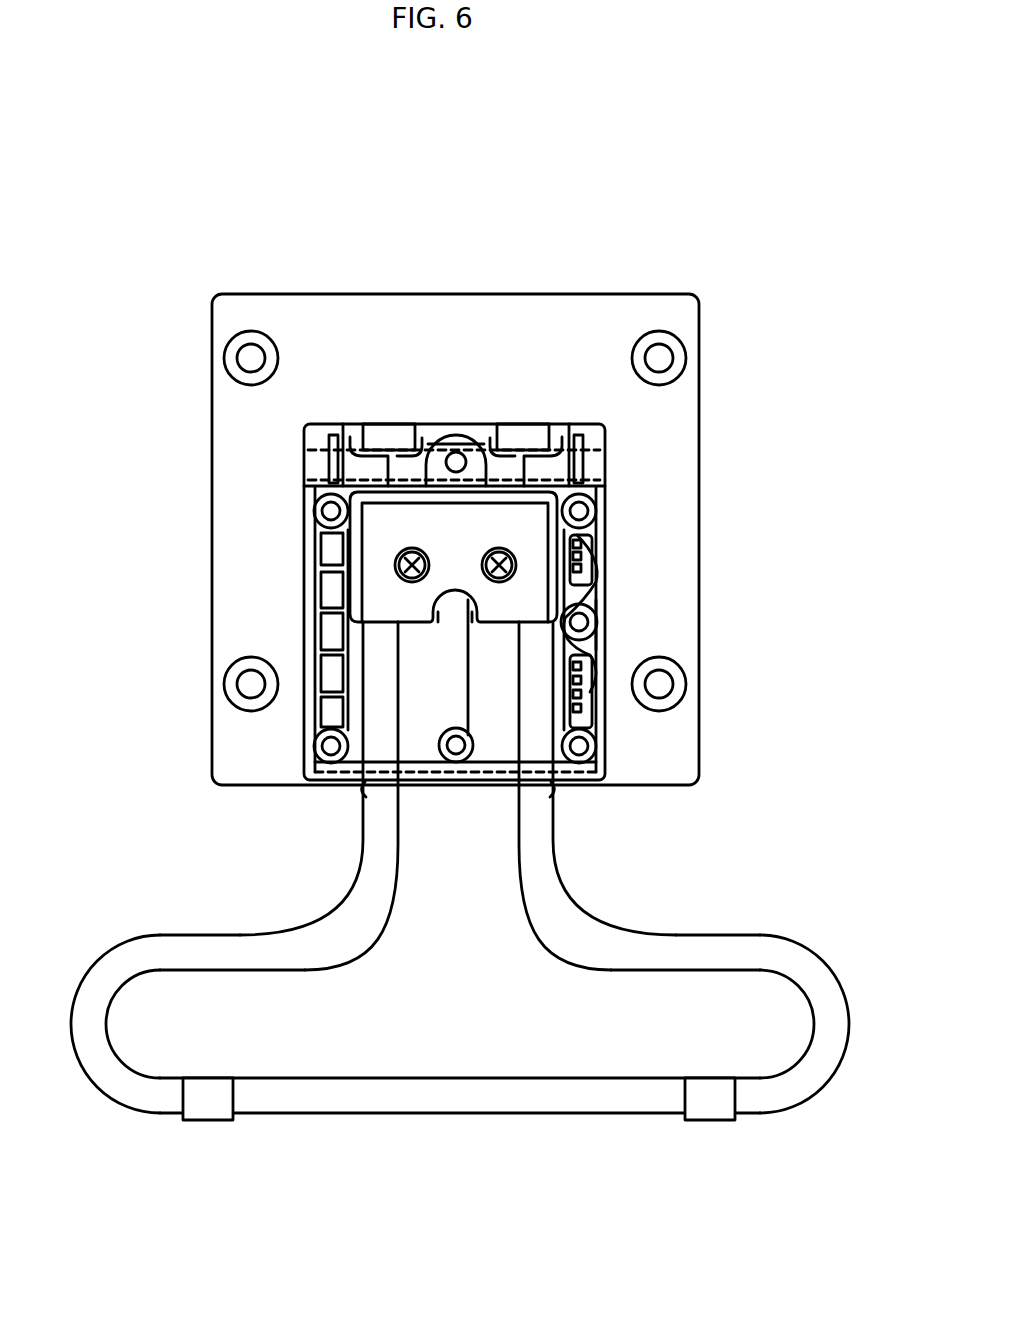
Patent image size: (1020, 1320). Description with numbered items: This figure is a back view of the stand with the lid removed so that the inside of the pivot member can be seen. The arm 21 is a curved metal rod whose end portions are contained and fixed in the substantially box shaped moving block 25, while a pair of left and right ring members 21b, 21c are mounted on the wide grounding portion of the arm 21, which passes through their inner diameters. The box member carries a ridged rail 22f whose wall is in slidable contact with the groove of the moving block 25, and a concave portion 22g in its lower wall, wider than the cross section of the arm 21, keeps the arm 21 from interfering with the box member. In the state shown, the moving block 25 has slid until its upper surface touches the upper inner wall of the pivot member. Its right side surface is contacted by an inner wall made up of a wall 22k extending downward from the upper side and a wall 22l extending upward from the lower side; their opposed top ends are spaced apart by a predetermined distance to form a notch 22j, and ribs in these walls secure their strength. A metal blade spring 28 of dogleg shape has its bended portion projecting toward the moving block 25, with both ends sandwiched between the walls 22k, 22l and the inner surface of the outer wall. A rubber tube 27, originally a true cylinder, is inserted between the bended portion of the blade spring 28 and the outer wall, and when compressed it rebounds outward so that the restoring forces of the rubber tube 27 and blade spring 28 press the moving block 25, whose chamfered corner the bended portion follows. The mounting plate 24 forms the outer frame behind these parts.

The arm 21 is at (185, 935).
The ring member 21b is at (713, 1122).
The ring member 21c is at (210, 1122).
The rail 22f is at (480, 697).
The concave portion 22g is at (370, 787).
The notch 22j is at (590, 652).
The wall 22k is at (592, 519).
The wall 22l is at (590, 712).
The mounting plate 24 is at (422, 293).
The moving block 25 is at (370, 548).
The rubber tube 27 is at (598, 624).
The metal blade spring 28 is at (590, 588).